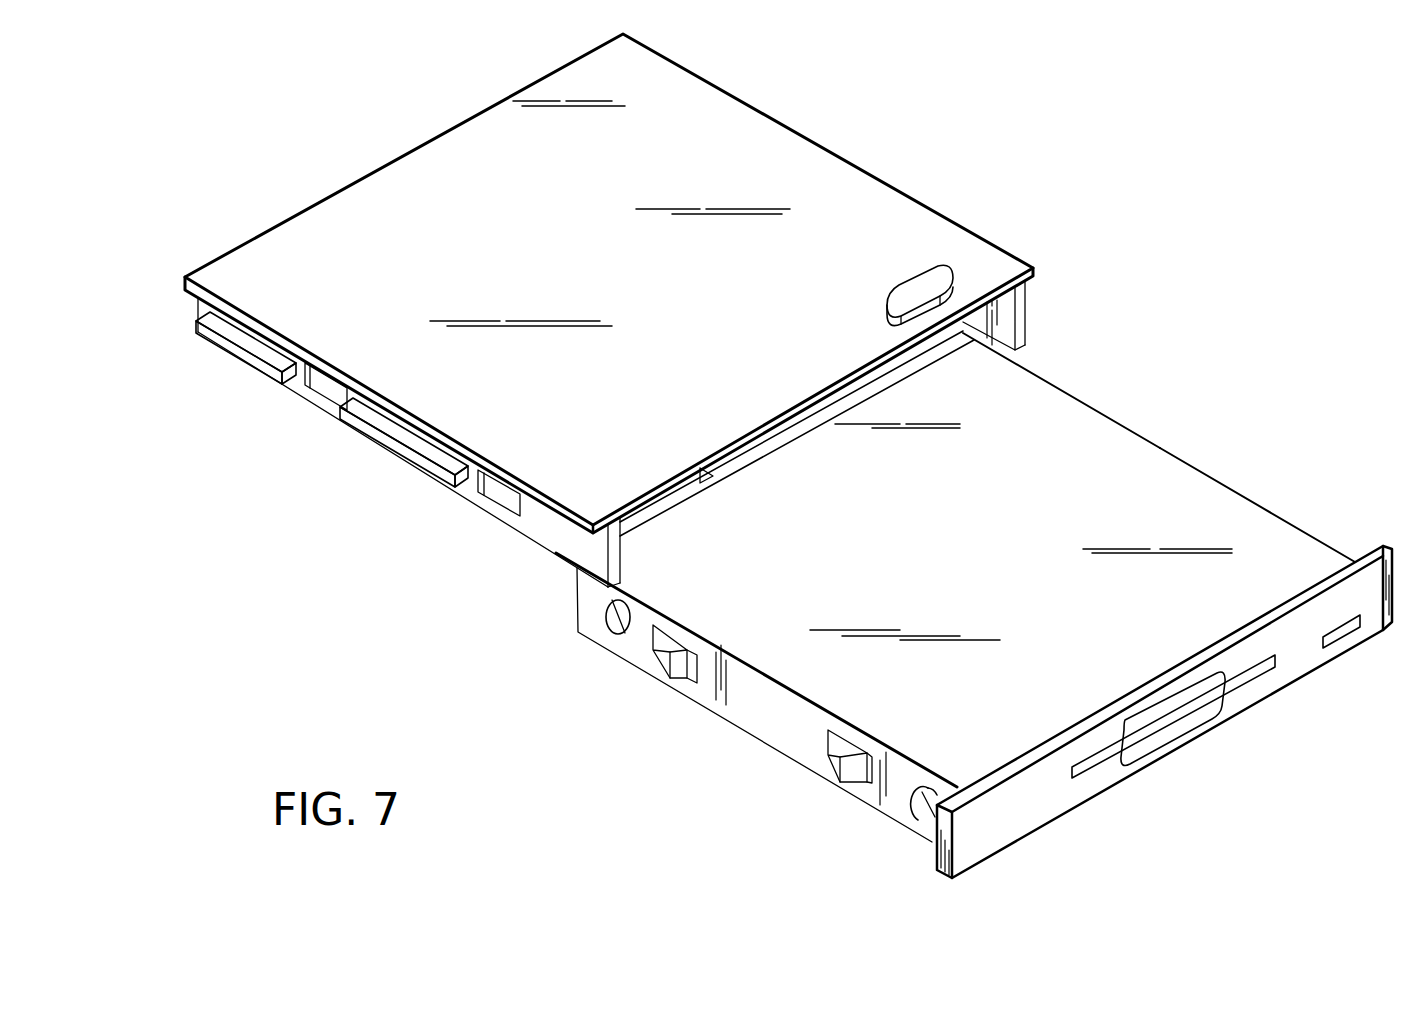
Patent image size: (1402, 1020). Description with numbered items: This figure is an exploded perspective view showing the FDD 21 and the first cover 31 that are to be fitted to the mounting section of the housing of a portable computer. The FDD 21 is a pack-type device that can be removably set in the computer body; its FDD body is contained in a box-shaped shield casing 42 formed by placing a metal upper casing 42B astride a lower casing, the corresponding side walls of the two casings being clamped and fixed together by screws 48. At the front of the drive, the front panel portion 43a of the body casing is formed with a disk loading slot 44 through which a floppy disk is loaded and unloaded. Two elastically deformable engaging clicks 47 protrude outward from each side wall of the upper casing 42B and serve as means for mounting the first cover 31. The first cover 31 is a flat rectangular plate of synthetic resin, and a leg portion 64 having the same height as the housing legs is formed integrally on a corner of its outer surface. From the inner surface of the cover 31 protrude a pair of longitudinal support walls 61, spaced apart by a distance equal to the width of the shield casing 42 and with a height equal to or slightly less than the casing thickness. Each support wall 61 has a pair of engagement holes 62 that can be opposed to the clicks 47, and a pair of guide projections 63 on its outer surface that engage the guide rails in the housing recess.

The first cover 31 is at (764, 148).
The leg portion 64 is at (918, 285).
The support wall 61 is at (1003, 321).
The engagement hole 62 is at (322, 396).
The guide projection 63 is at (235, 350).
The FDD 21 is at (971, 609).
The shield casing 42 is at (1189, 500).
The upper casing 42B is at (1278, 530).
The screw 48 is at (608, 627).
The engaging click 47 is at (675, 672).
The disk loading slot 44 is at (1175, 722).
The front panel portion 43a is at (1037, 810).